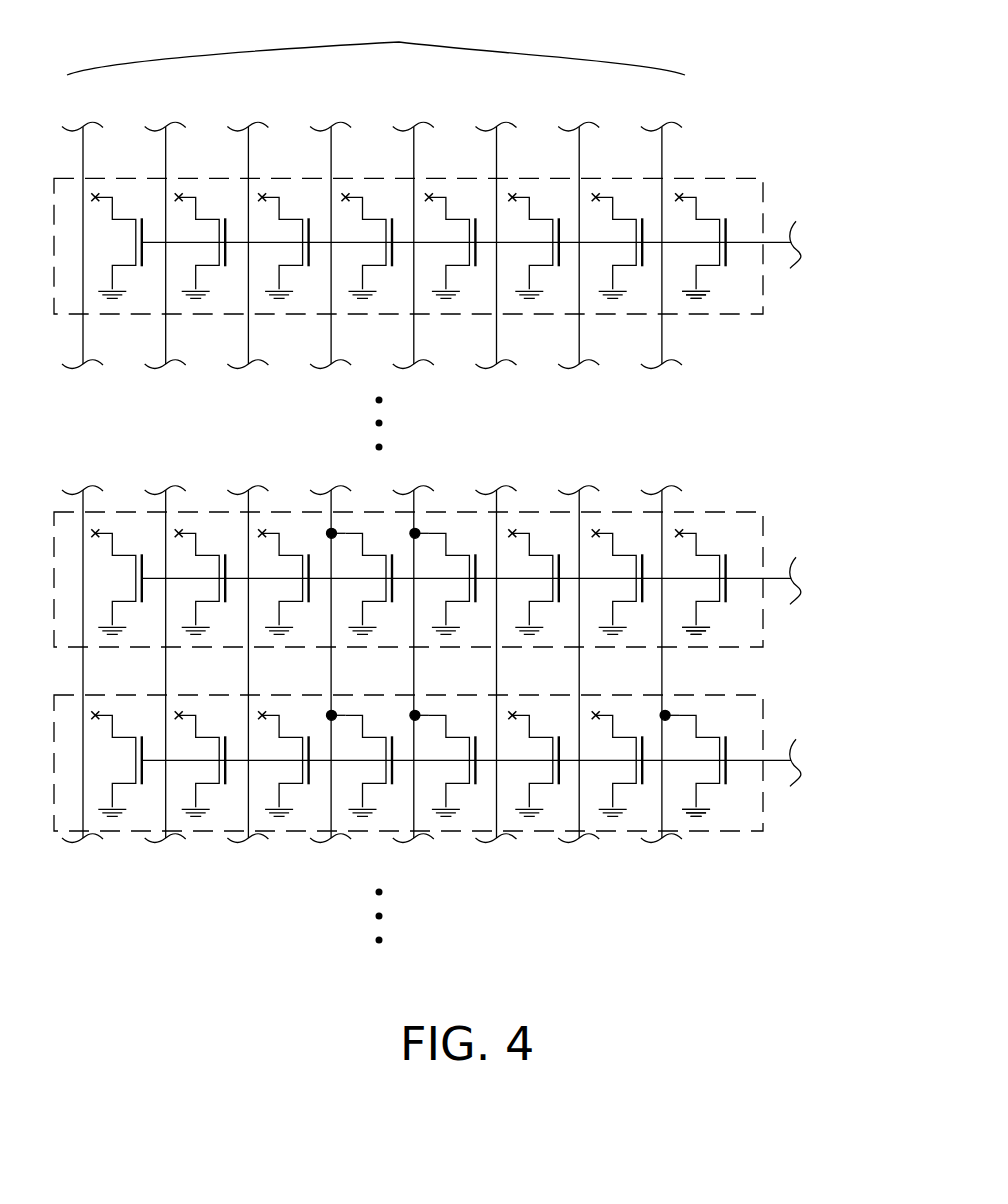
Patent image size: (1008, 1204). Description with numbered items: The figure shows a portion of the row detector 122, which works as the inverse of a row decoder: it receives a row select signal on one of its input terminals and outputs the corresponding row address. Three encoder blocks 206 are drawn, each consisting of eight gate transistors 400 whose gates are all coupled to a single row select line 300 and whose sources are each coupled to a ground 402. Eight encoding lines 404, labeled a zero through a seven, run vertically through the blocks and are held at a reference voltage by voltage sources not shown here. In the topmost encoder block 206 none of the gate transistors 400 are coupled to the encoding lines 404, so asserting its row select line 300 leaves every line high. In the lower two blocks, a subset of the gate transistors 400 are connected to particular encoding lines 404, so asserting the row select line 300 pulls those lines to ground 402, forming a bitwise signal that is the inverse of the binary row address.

The row detector 122 is at (137, 951).
The encoding lines 404 is at (373, 428).
The encoder block 206 is at (548, 316).
The row select line 300 is at (773, 250).
The gate transistor 400 is at (727, 222).
The ground 402 is at (699, 303).